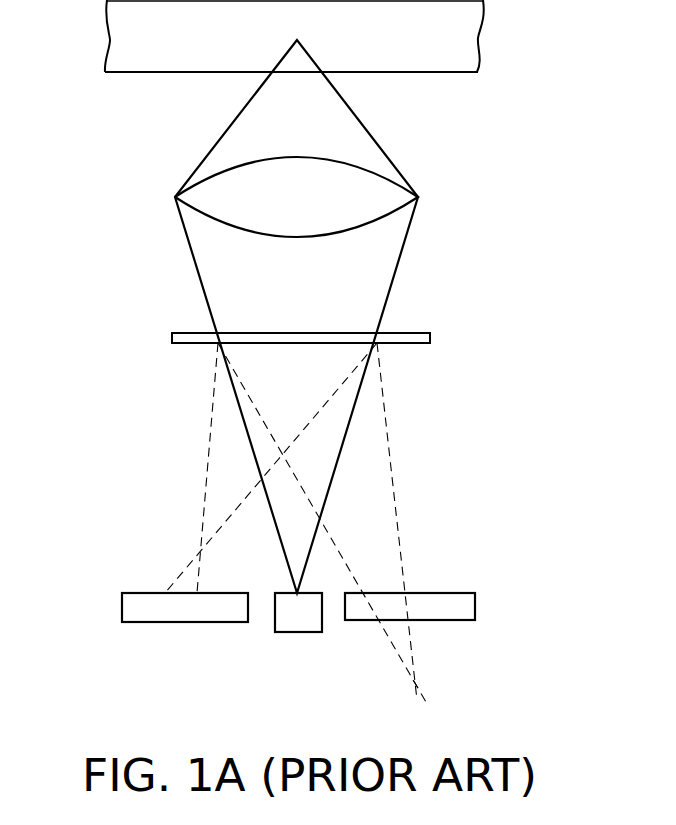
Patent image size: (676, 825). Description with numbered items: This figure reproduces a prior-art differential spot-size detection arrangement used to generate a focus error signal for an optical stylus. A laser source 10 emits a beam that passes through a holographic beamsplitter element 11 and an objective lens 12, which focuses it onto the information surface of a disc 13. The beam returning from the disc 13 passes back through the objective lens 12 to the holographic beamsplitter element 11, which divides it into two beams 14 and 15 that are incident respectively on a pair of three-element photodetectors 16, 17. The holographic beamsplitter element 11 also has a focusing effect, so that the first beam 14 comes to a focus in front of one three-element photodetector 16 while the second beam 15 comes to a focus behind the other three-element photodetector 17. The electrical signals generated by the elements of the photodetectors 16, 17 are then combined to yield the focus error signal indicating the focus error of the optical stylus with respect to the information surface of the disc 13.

The laser source 10 is at (300, 615).
The holographic beamsplitter element 11 is at (407, 340).
The objective lens 12 is at (365, 188).
The disc 13 is at (458, 43).
The first beam 14 is at (417, 683).
The second beam 15 is at (200, 553).
The 3-element photodetector 16 is at (442, 605).
The 3-element photodetector 17 is at (150, 608).